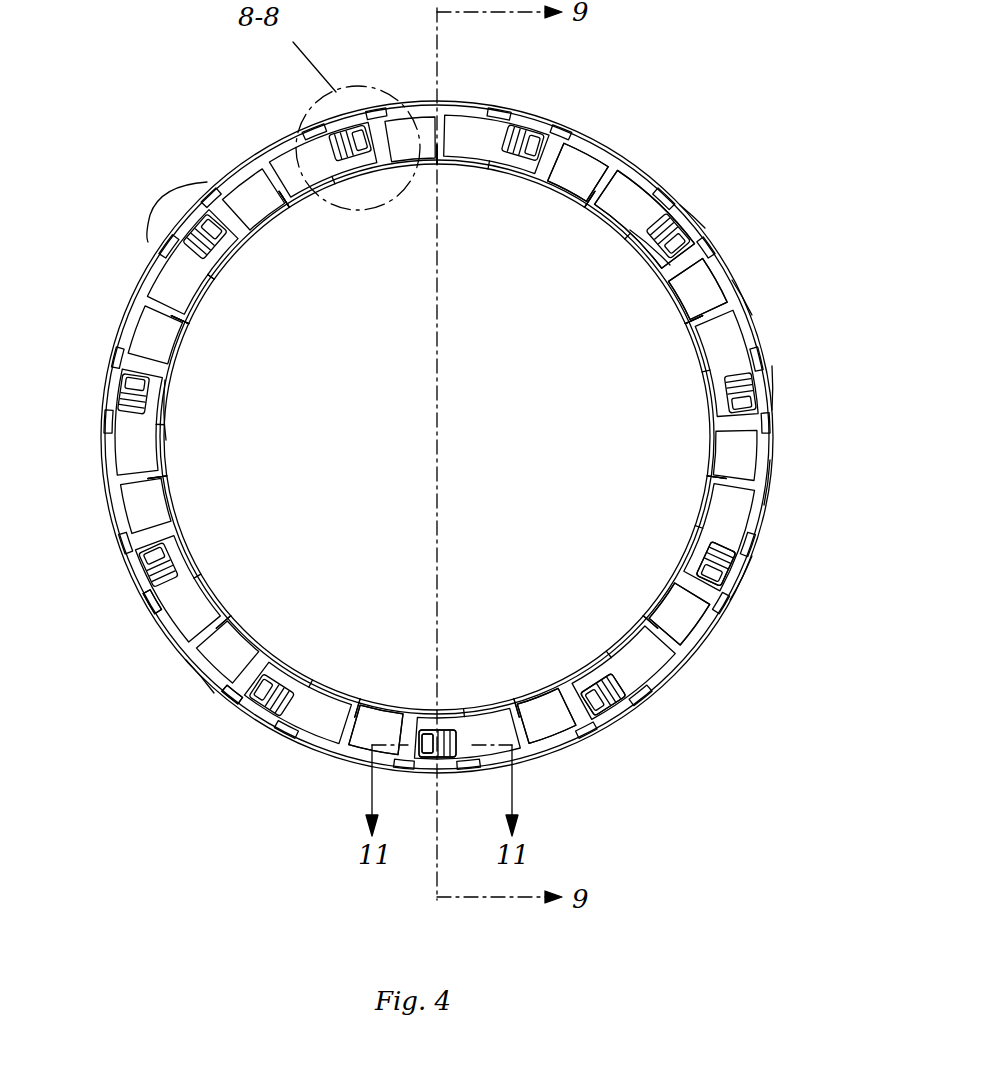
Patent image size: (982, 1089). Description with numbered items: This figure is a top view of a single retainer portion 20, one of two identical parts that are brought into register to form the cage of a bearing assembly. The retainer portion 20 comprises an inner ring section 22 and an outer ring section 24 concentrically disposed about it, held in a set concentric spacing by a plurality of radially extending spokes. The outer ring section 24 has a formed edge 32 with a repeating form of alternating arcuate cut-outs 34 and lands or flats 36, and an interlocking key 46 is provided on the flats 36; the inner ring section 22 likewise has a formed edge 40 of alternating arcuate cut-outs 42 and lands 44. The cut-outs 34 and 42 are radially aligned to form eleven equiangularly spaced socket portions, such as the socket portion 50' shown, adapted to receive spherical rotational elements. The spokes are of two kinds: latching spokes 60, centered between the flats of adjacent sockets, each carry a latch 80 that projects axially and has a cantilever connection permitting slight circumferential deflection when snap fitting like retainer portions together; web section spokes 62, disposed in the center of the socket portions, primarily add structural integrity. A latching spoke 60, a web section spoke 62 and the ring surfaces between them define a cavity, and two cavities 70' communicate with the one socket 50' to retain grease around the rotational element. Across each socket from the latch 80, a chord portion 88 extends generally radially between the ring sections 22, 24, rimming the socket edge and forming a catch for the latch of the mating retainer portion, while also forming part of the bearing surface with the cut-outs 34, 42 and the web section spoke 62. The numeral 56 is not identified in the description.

The retainer portion 20 is at (437, 393).
The inner ring section 22 is at (527, 180).
The outer ring section 24 is at (588, 128).
The formed edge 32 is at (666, 190).
The arcuate cut-out 34 is at (740, 295).
The land 36 is at (690, 222).
The formed edge 40 is at (660, 255).
The arcuate cut-out 42 is at (193, 327).
The land 44 is at (168, 408).
The interlocking key 46 is at (158, 190).
The socket portion 50' is at (160, 695).
The outer wall portion 56 is at (738, 585).
The latching spoke 60 is at (430, 735).
The web section spoke 62 is at (357, 720).
The cavity 70' is at (172, 687).
The latch 80 is at (440, 735).
The chord portion 88 is at (680, 297).